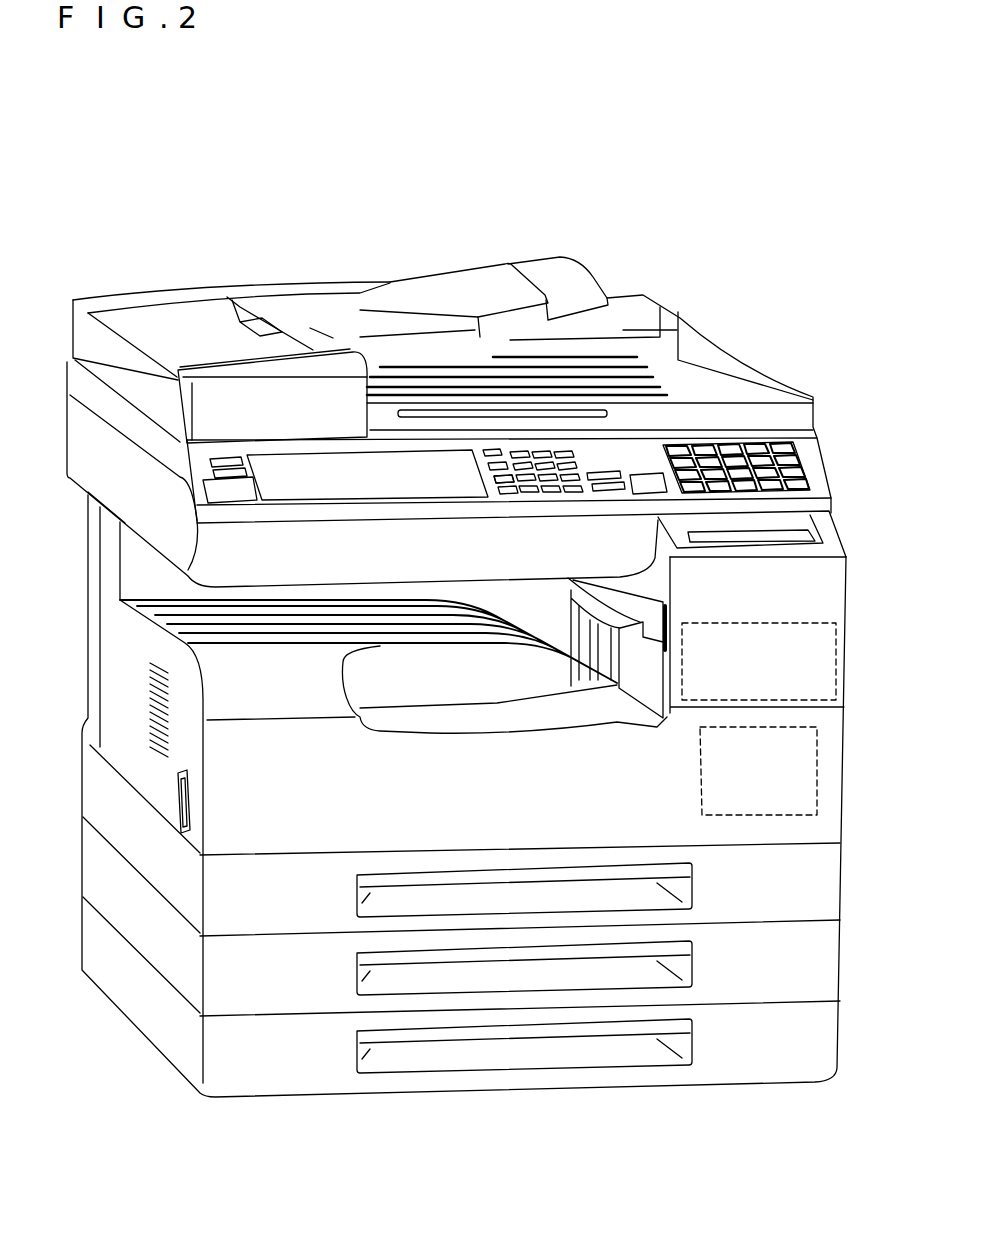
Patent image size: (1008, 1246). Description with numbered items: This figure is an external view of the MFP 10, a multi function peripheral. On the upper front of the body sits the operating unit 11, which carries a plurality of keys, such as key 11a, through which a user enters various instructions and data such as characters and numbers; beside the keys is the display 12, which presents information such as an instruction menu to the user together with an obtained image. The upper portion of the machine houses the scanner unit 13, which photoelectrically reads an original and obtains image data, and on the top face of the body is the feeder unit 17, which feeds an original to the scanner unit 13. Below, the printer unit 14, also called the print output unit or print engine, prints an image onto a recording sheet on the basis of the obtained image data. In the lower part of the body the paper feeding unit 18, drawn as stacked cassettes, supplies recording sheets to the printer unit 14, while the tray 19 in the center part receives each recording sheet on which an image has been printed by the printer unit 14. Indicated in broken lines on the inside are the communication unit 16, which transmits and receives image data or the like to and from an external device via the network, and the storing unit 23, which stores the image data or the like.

The MFP 10 is at (456, 620).
The operating unit 11 is at (600, 460).
The operation key 11a is at (565, 493).
The display 12 is at (423, 483).
The scanner unit 13 is at (63, 352).
The printer unit 14 is at (852, 600).
The communication unit 16 is at (700, 775).
The feeder unit 17 is at (302, 318).
The paper feeding unit 18 is at (167, 1010).
The tray 19 is at (503, 643).
The storing unit 23 is at (758, 616).